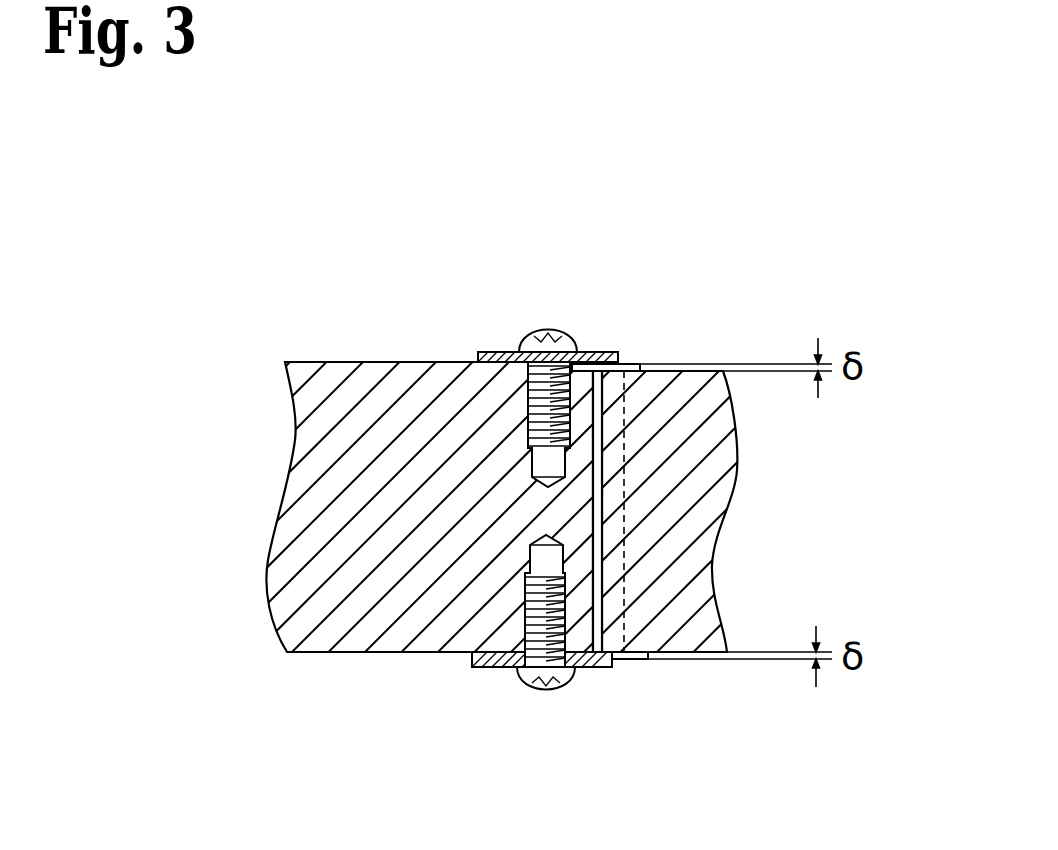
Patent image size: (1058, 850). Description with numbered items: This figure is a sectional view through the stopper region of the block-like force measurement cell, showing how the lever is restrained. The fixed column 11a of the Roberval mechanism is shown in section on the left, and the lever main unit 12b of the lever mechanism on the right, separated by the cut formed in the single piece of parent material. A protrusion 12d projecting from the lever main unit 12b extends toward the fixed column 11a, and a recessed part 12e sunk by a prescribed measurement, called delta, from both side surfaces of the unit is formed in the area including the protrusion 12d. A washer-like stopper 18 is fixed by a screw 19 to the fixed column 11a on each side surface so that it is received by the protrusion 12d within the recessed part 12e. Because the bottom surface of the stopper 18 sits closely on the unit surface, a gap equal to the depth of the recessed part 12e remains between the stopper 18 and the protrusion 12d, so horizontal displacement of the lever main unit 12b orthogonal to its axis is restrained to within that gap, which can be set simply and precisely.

The fixed column 11a is at (382, 618).
The lever main unit 12b is at (687, 562).
The protrusion 12d is at (612, 478).
The recessed part 12e is at (637, 364).
The stopper 18 is at (493, 352).
The screw 19 is at (533, 336).